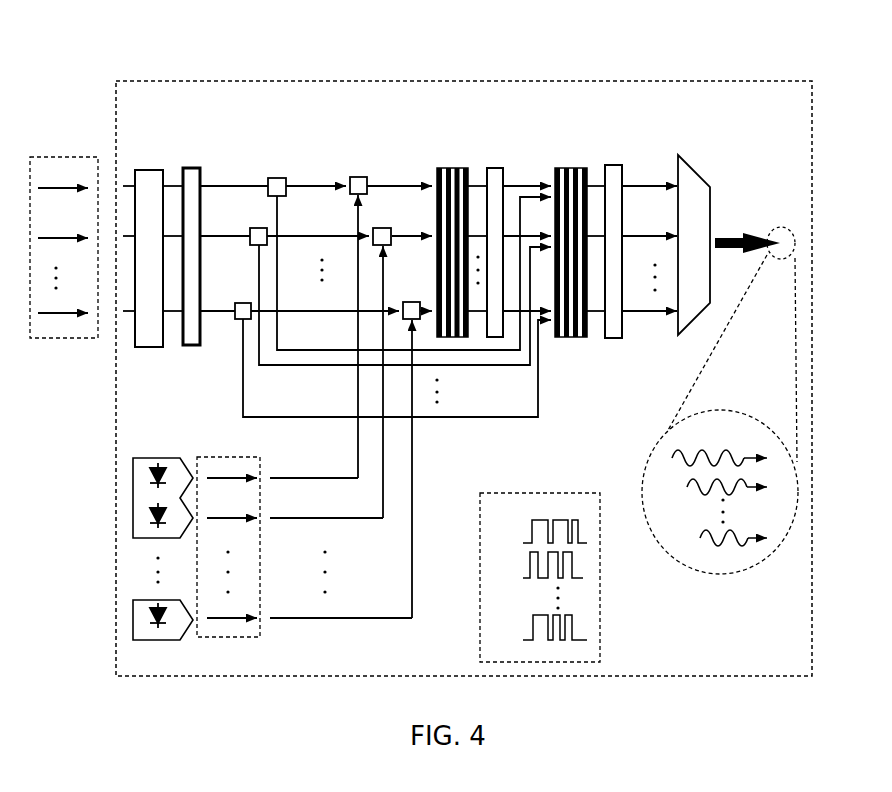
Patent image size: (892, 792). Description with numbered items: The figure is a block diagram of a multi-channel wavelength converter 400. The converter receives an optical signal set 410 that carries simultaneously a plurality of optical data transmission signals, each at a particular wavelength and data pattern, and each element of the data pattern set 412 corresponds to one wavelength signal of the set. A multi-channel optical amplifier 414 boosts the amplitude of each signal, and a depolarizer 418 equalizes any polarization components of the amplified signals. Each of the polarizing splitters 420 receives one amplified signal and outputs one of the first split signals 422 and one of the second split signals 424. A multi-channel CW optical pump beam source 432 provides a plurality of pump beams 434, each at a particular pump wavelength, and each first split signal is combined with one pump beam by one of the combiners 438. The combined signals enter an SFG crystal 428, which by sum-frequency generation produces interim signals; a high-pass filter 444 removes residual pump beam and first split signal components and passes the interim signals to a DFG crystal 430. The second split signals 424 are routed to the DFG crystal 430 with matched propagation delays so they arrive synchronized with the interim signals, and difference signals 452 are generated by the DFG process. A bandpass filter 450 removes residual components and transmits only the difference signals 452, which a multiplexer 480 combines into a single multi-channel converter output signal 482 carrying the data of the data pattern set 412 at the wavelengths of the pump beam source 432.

The converter 400 is at (516, 76).
The optical signal set 410 is at (80, 157).
The data pattern set 412 is at (510, 495).
The multi-channel optical amplifier 414 is at (147, 168).
The depolarizer 418 is at (197, 168).
The polarizing splitters 420 is at (268, 195).
The first split signals 422 is at (328, 187).
The second split signals 424 is at (500, 353).
The SFG crystal 428 is at (443, 167).
The DFG crystal 430 is at (580, 167).
The multi-channel CW optical pump beam source 432 is at (172, 458).
The pump beams 434 is at (237, 638).
The combiners 438 is at (358, 176).
The high-pass filter 444 is at (495, 167).
The bandpass filter 450 is at (607, 165).
The difference signals 452 is at (630, 312).
The multiplexer 480 is at (710, 187).
The multi-channel converter output signal 482 is at (716, 410).